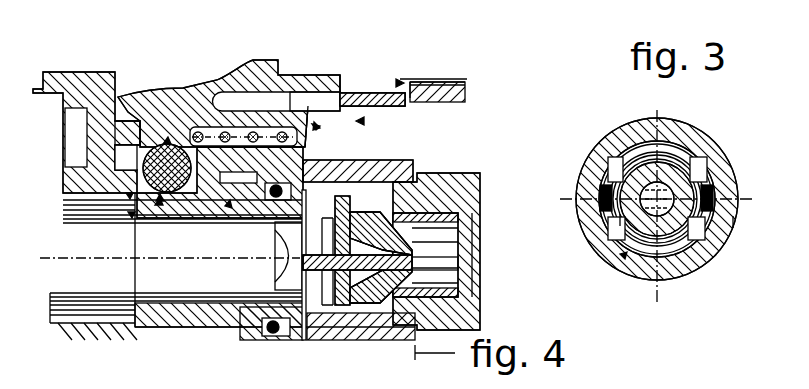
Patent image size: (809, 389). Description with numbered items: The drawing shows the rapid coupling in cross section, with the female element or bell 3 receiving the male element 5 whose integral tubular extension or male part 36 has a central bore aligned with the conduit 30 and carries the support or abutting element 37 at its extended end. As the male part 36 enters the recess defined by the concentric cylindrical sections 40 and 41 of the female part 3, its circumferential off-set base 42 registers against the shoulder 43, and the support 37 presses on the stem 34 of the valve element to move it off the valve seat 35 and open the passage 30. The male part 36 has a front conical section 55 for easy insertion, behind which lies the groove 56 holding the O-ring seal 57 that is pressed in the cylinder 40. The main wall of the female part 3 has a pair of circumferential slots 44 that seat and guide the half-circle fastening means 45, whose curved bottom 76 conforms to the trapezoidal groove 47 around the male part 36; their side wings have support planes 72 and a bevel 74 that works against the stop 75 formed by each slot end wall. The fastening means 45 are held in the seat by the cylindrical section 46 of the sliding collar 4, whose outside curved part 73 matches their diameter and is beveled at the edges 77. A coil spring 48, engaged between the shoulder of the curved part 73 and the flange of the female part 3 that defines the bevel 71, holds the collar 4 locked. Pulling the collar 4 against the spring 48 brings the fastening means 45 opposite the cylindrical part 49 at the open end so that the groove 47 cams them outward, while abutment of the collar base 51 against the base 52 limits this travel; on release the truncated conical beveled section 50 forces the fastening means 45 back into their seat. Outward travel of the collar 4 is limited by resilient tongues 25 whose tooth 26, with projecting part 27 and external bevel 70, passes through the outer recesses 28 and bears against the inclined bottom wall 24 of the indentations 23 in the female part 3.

In FIG. 4, the bell or female element 3 is at (428, 100).
In FIG. 3, the bell or female element 3 is at (587, 197).
In FIG. 4, the sliding collar 4 is at (258, 78).
In FIG. 4, the bell carrier or male element 5 is at (84, 88).
In FIG. 4, the indentations or reductions 23 is at (356, 121).
In FIG. 4, the inclined bottom wall 24 is at (312, 149).
In FIG. 4, the resilient tongues 25 is at (262, 108).
In FIG. 4, the tooth 26 is at (352, 78).
In FIG. 4, the projecting part 27 is at (320, 128).
In FIG. 4, the holes or outer recesses 28 is at (316, 118).
In FIG. 3, the bore or conduit 30 is at (620, 220).
In FIG. 4, the axial nozzle, extension or stem portion 34 is at (325, 310).
In FIG. 4, the valve seat 35 is at (340, 313).
In FIG. 4, the tubular extension or male part 36 is at (183, 312).
In FIG. 3, the tubular extension or male part 36 is at (717, 250).
In FIG. 4, the support or abutting element 37 is at (300, 322).
In FIG. 4, the cylindrical section 40 is at (266, 186).
In FIG. 4, the cylindrical section 41 is at (133, 193).
In FIG. 4, the base or circumferential off-set 42 is at (213, 183).
In FIG. 4, the base or shoulder 43 is at (230, 200).
In FIG. 4, the circumferential slots 44 is at (160, 194).
In FIG. 4, the arcuate segments or male fastening means 45 is at (117, 182).
In FIG. 3, the arcuate segments or male fastening means 45 is at (638, 155).
In FIG. 4, the cylindrical section 46 is at (135, 212).
In FIG. 3, the cylindrical section 46 is at (680, 263).
In FIG. 4, the circumferential groove 47 is at (160, 198).
In FIG. 4, the elastic or biasing means 48 is at (228, 132).
In FIG. 4, the cylindrical part 49 is at (125, 122).
In FIG. 4, the beveled section 50 is at (147, 126).
In FIG. 4, the base 51 is at (358, 83).
In FIG. 4, the base 52 is at (404, 83).
In FIG. 4, the front conical section 55 is at (383, 173).
In FIG. 4, the housing or groove 56 is at (255, 188).
In FIG. 4, the seal ring 57 is at (265, 330).
In FIG. 4, the external bevel 70 is at (312, 124).
In FIG. 4, the bevel 71 is at (305, 100).
In FIG. 3, the planes of support of side wings 72 is at (703, 170).
In FIG. 4, the outside curved part 73 is at (168, 137).
In FIG. 3, the outside curved part 73 is at (627, 252).
In FIG. 3, the bevel 74 is at (713, 197).
In FIG. 3, the stop or end wall 75 is at (733, 222).
In FIG. 3, the inner surface or curved bottom 76 is at (667, 167).
In FIG. 4, the beveled edges 77 is at (140, 142).